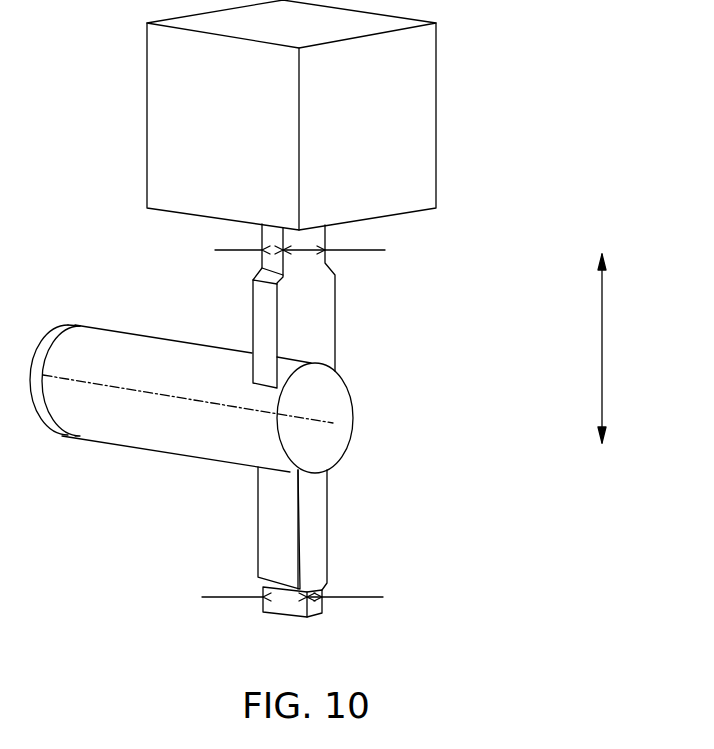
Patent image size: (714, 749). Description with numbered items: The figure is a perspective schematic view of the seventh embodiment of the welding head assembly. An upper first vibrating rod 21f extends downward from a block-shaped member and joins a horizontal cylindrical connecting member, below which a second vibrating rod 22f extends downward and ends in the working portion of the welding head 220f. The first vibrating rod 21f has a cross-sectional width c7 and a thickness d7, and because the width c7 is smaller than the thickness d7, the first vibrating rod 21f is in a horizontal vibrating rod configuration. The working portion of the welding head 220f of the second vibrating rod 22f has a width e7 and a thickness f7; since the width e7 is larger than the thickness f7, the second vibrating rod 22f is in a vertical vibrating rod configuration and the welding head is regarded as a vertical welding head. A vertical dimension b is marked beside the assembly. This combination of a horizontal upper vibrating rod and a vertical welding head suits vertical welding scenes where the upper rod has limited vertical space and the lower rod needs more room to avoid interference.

The first vibrating rod 21f is at (322, 313).
The second vibrating rod 22f is at (318, 535).
The working portion of the welding head 220f is at (291, 621).
The width of the first vibrating rod c7 is at (245, 242).
The thickness of the first vibrating rod d7 is at (334, 242).
The width of the working portion of the welding head e7 is at (254, 586).
The thickness of the working portion of the welding head f7 is at (345, 586).
The height dimension b is at (618, 348).